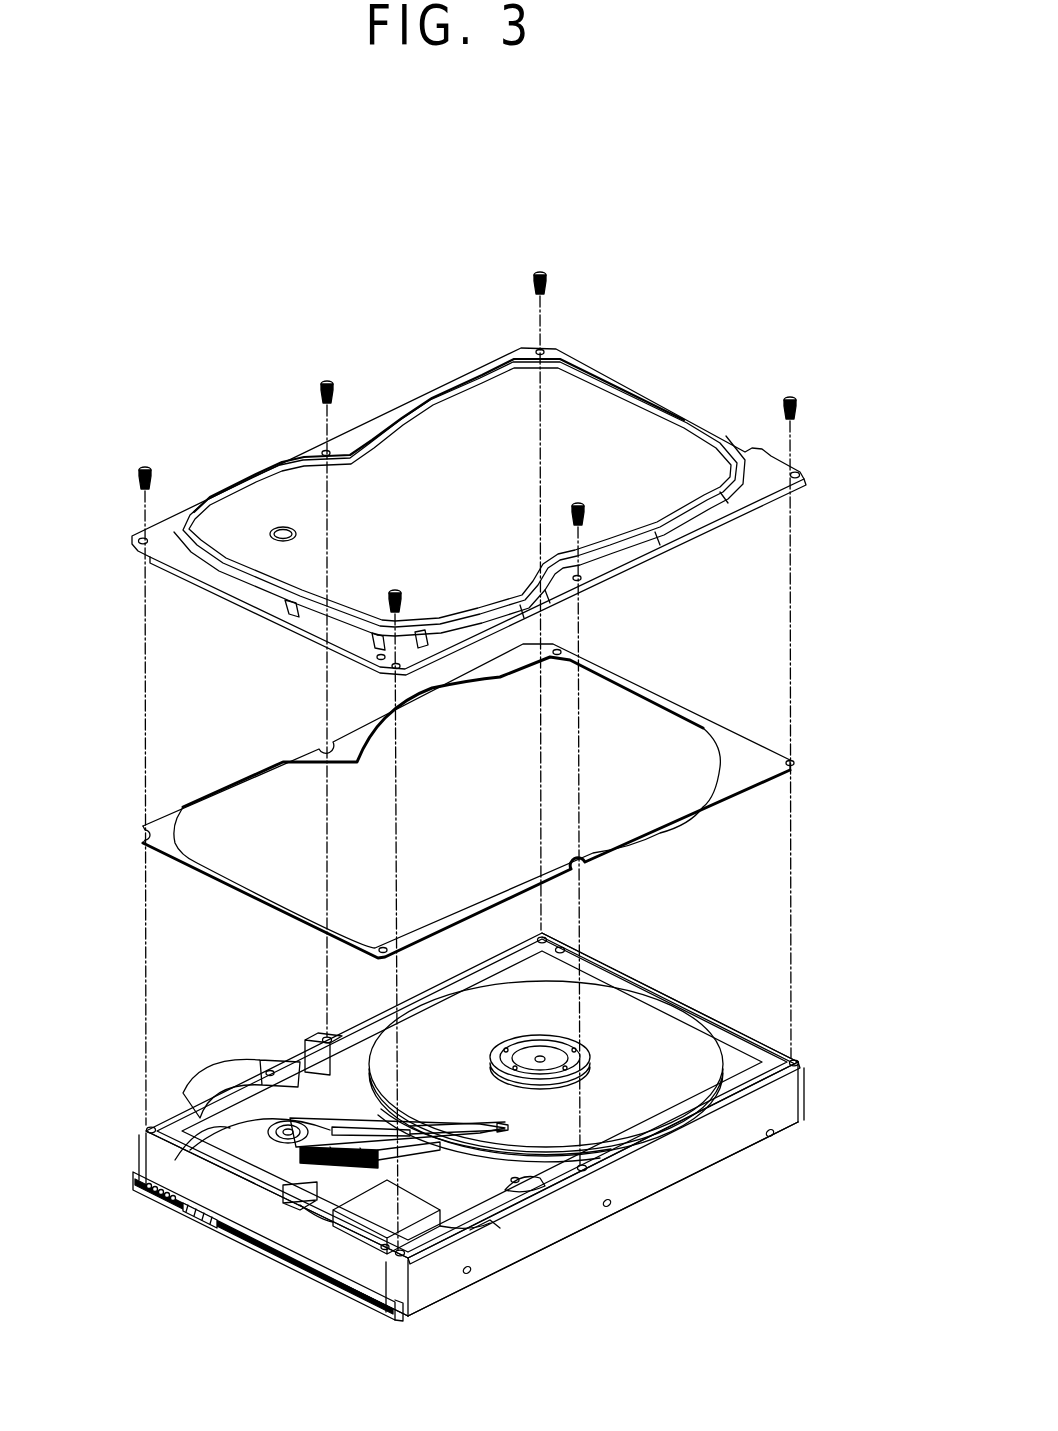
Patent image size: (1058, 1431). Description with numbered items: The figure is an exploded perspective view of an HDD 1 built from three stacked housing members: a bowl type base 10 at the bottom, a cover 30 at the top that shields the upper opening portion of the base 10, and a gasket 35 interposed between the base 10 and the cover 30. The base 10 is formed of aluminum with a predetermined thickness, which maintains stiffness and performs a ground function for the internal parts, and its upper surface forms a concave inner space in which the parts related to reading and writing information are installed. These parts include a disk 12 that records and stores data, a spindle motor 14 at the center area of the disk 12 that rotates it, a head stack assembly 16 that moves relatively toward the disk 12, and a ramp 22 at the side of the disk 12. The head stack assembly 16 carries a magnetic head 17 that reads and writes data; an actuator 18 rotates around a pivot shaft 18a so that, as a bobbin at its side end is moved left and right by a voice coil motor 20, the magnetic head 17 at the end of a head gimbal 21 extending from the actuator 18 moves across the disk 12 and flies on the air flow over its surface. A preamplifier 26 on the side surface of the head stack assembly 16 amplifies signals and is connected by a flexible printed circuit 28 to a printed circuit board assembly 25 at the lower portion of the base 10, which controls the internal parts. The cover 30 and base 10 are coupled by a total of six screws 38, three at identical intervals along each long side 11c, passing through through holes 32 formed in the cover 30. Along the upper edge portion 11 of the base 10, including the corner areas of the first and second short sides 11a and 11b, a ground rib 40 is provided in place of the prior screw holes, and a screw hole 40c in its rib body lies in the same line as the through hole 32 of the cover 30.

The HDD 1 is at (168, 353).
The base 10 is at (655, 1184).
The upper edge portion 11 is at (720, 1104).
The first short side 11a is at (273, 1265).
The second short side 11b is at (712, 1018).
The long side 11c is at (316, 1048).
The disk 12 is at (553, 998).
The spindle motor 14 is at (576, 1035).
The head stack assembly 16 is at (356, 1118).
The magnetic head 17 is at (502, 1127).
The actuator 18 is at (400, 1143).
The pivot shaft 18a is at (262, 1130).
The voice coil motor 20 is at (244, 1100).
The head gimbal 21 is at (482, 1120).
The ramp 22 is at (528, 1185).
The printed circuit board assembly 25 is at (362, 1304).
The preamplifier 26 is at (163, 1207).
The flexible printed circuit 28 is at (213, 1231).
The cover 30 is at (456, 370).
The through hole 32 is at (802, 474).
The gasket 35 is at (660, 697).
The screw 38 is at (539, 270).
The ground rib 40 is at (804, 1073).
The screw hole 40c is at (806, 1060).